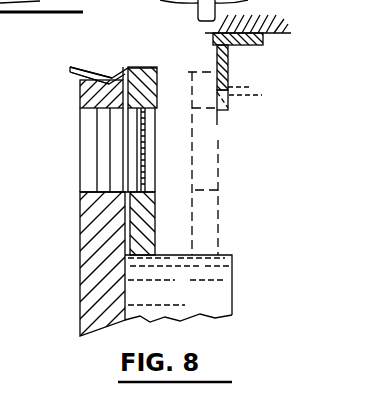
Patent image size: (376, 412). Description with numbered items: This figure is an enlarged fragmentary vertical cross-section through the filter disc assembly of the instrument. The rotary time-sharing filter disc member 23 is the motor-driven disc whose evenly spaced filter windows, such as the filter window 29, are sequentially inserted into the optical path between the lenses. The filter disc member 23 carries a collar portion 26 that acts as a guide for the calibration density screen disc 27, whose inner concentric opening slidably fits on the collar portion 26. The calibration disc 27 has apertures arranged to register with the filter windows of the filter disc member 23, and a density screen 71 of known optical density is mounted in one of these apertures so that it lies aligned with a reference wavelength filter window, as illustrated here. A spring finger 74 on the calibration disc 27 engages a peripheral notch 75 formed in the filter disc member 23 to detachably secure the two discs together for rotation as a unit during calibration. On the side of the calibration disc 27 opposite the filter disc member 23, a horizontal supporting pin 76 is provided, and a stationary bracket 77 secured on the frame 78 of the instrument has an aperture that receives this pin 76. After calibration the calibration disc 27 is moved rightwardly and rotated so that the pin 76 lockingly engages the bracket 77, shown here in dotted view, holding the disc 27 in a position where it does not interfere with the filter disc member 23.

The rotary time-sharing filter disc member 23 is at (82, 243).
The collar portion 26 is at (220, 273).
The calibration density screen disc 27 is at (150, 98).
The 448 nm filter window 29 is at (97, 148).
The density screen 71 is at (137, 156).
The spring finger 74 is at (120, 73).
The peripheral notch 75 is at (110, 80).
The horizontal supporting pin 76 is at (250, 100).
The stationary bracket 77 is at (228, 60).
The frame 78 is at (268, 20).